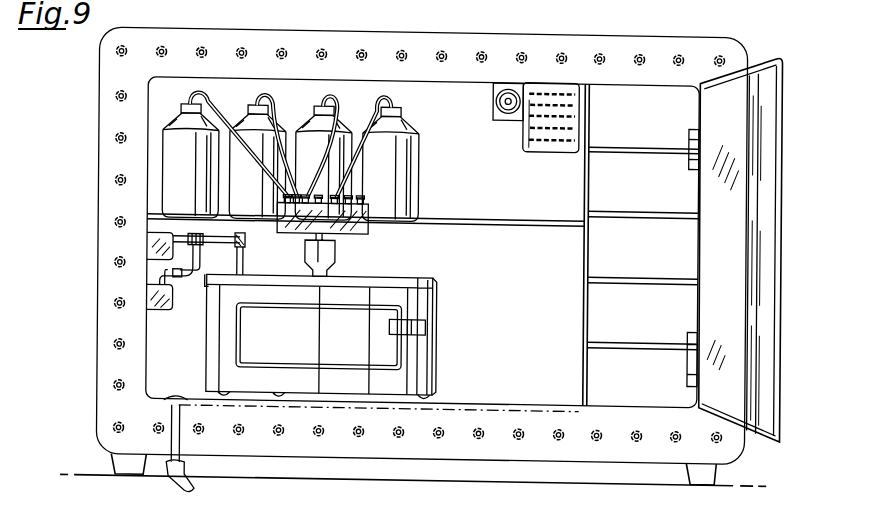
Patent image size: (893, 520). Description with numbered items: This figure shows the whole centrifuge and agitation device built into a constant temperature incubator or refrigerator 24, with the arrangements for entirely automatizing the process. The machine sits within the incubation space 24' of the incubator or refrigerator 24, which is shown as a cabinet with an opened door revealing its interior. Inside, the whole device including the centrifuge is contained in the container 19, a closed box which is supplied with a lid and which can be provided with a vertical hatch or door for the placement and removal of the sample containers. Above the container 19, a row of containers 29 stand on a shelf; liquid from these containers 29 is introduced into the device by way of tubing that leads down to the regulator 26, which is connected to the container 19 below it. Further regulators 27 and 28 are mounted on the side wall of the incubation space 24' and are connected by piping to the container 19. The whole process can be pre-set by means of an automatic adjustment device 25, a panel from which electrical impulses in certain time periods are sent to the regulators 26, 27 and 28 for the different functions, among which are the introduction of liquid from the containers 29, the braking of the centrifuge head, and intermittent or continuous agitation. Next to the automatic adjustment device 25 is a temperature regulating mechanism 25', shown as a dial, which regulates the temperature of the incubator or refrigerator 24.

The container 19 is at (420, 375).
The constant temperature incubator or refrigerator 24 is at (412, 263).
The incubation space 24' is at (710, 225).
The automatic adjustment device 25 is at (583, 80).
The temperature regulating mechanism 25' is at (550, 64).
The regulator 26 is at (368, 235).
The regulator 27 is at (150, 244).
The regulator 28 is at (150, 300).
The containers 29 is at (407, 181).